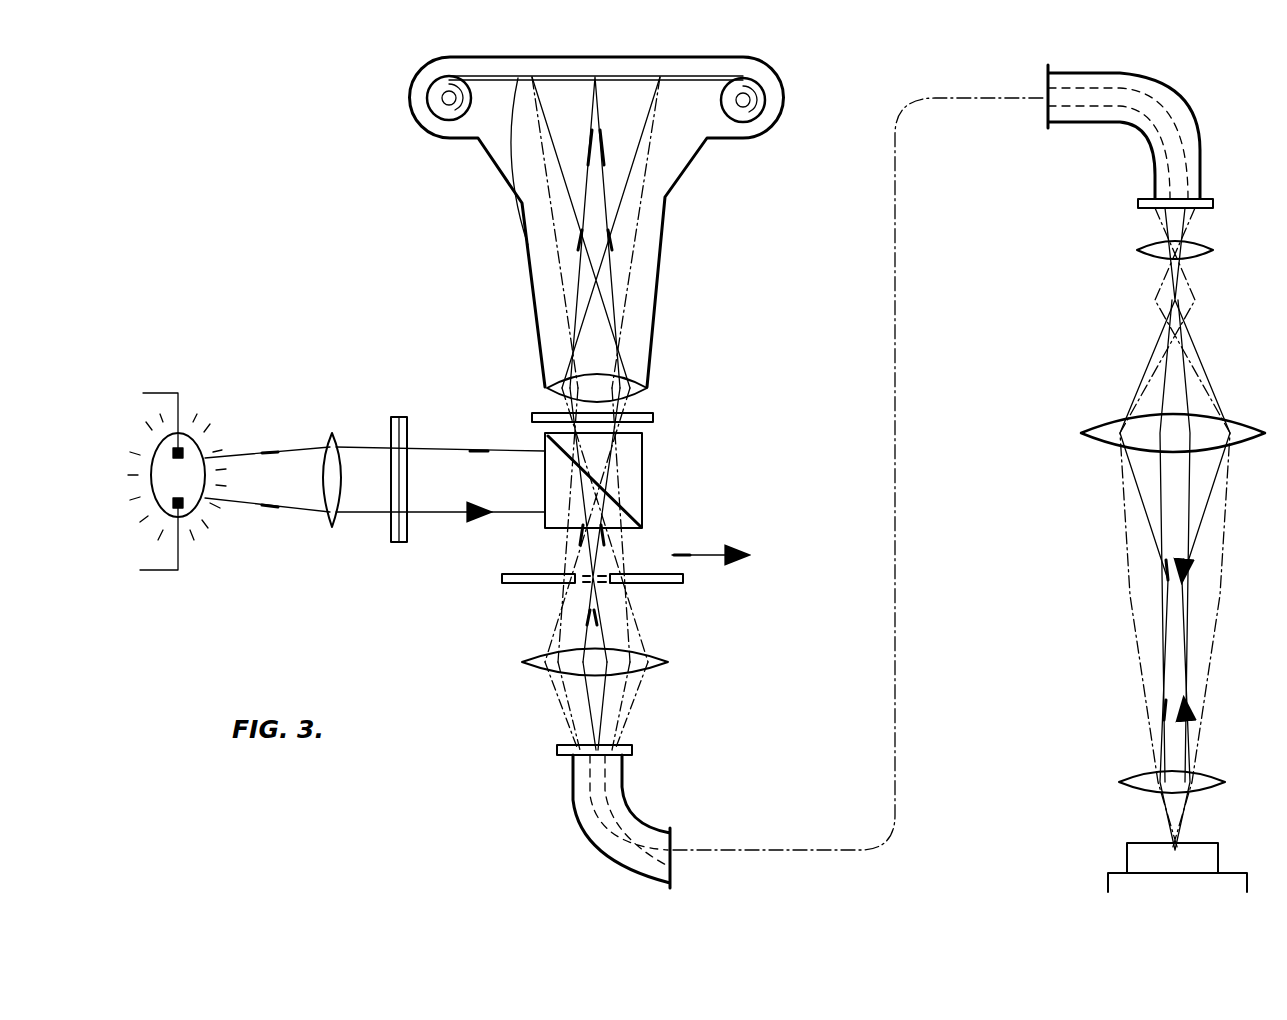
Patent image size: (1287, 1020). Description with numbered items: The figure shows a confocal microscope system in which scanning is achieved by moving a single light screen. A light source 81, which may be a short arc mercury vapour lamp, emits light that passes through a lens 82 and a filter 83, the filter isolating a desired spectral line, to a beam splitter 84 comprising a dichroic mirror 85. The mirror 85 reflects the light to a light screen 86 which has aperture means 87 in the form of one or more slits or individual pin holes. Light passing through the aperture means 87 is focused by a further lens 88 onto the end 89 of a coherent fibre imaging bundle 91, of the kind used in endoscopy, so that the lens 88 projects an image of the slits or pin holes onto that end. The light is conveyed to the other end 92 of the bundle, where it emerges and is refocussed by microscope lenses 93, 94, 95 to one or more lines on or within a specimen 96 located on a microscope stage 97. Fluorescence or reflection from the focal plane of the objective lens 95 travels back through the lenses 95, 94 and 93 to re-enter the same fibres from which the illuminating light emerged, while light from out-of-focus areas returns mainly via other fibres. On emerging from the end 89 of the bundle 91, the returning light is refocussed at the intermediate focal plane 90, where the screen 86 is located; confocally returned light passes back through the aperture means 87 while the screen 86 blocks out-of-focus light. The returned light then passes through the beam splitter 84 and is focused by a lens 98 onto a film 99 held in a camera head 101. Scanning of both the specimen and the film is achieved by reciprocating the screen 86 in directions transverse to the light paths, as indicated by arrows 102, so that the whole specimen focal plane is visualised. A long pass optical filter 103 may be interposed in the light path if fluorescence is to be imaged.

The light source 81 is at (200, 440).
The lens 82 is at (332, 433).
The filter 83 is at (405, 417).
The beam splitter 84 is at (645, 450).
The dichroic mirror 85 is at (616, 504).
The light screen 86 is at (683, 581).
The aperture means 87 is at (575, 580).
The further lens 88 is at (668, 660).
The end of fibre bundle 89 is at (620, 760).
The intermediate focal plane 90 is at (495, 571).
The coherent fibre imaging bundle 91 is at (1248, 100).
The other end of fibre bundle 92 is at (1195, 205).
The microscope lens 93 is at (1205, 248).
The microscope lens 94 is at (1245, 415).
The objective lens 95 is at (1210, 778).
The specimen 96 is at (1137, 853).
The microscope stage 97 is at (1118, 885).
The lens 98 is at (650, 388).
The film 99 is at (505, 178).
The camera head 101 is at (697, 155).
The arrows 102 is at (707, 555).
The long pass optical filter 103 is at (655, 420).